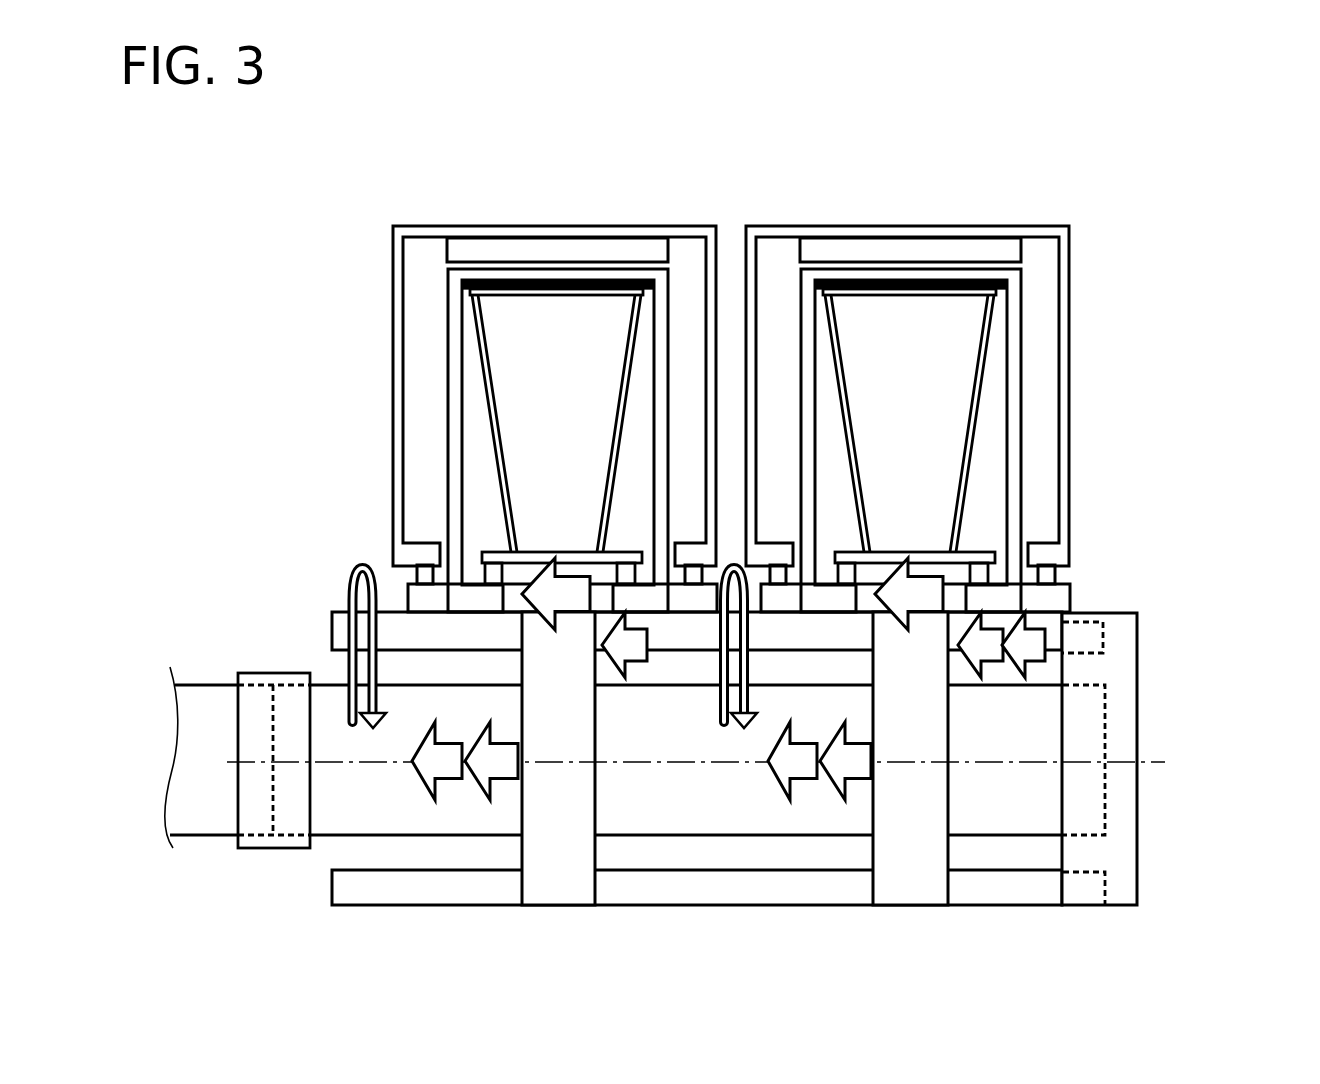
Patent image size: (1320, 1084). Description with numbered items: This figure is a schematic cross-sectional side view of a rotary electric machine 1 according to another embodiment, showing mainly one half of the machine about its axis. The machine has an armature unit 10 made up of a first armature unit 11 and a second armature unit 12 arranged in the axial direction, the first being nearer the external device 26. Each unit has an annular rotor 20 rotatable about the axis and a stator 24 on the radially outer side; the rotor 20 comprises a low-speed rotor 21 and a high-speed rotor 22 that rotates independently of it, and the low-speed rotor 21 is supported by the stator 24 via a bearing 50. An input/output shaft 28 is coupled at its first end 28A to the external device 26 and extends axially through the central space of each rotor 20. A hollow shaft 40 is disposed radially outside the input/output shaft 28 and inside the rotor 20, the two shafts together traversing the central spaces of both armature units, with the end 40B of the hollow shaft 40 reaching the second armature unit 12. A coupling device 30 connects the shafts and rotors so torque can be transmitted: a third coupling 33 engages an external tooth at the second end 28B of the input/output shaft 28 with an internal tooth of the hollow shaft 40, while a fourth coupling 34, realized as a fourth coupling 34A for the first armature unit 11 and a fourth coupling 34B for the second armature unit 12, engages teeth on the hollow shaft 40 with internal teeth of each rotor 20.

The rotary electric machine 1 is at (1212, 188).
The armature unit 10 is at (943, 107).
The first armature unit 11 is at (623, 150).
The second armature unit 12 is at (985, 150).
The rotor 20 is at (653, 187).
The low-speed rotor 21 is at (555, 282).
The high-speed rotor 22 is at (604, 292).
The stator 24 is at (487, 250).
The external device 26 is at (200, 692).
The input/output shaft 28 is at (328, 823).
The first end 28A is at (282, 825).
The second end 28B is at (1105, 718).
The coupling device 30 is at (859, 785).
The third coupling 33 is at (1130, 857).
The fourth coupling 34 is at (748, 785).
The fourth coupling 34A is at (548, 885).
The fourth coupling 34B is at (912, 887).
The hollow shaft 40 is at (655, 888).
The end 40B is at (1105, 638).
The bearing 50 is at (420, 572).